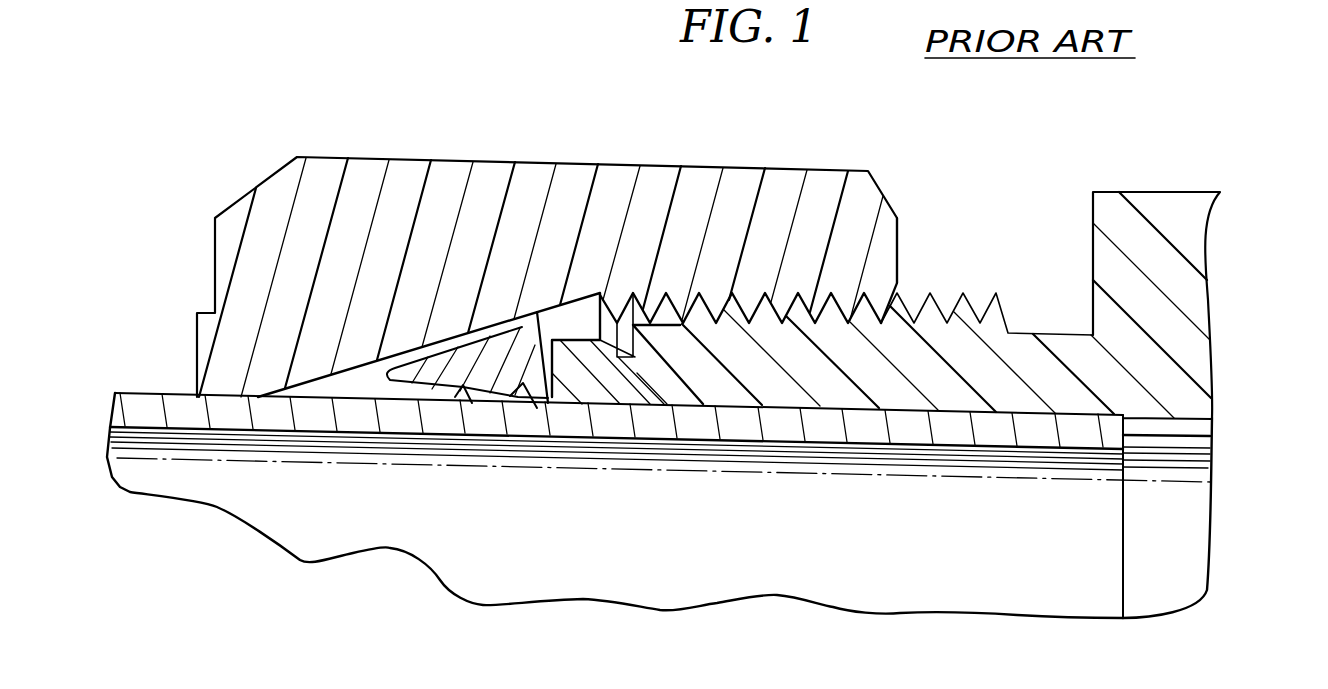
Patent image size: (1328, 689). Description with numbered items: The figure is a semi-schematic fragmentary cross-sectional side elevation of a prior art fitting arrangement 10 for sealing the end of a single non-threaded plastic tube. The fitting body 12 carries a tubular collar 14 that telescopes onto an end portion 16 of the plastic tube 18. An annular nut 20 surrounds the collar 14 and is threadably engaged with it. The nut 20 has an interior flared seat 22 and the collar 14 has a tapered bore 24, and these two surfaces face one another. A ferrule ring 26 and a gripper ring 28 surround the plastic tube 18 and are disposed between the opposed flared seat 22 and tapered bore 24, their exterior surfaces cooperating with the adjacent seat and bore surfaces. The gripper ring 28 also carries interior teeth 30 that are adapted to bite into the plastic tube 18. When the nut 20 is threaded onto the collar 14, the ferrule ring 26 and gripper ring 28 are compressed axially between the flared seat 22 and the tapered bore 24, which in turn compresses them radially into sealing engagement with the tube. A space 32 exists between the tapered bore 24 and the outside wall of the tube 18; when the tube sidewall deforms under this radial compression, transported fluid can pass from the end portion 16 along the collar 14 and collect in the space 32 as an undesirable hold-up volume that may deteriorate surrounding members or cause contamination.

The fitting arrangement 10 is at (588, 140).
The fitting body 12 is at (1145, 195).
The tubular collar 14 is at (1043, 367).
The end portion 16 is at (1130, 427).
The plastic tube 18 is at (900, 440).
The annular nut 20 is at (373, 155).
The flared seat 22 is at (640, 363).
The tapered bore 24 is at (357, 370).
The ferrule ring 26 is at (657, 400).
The gripper ring 28 is at (490, 398).
The interior teeth 30 is at (527, 398).
The space 32 is at (580, 320).